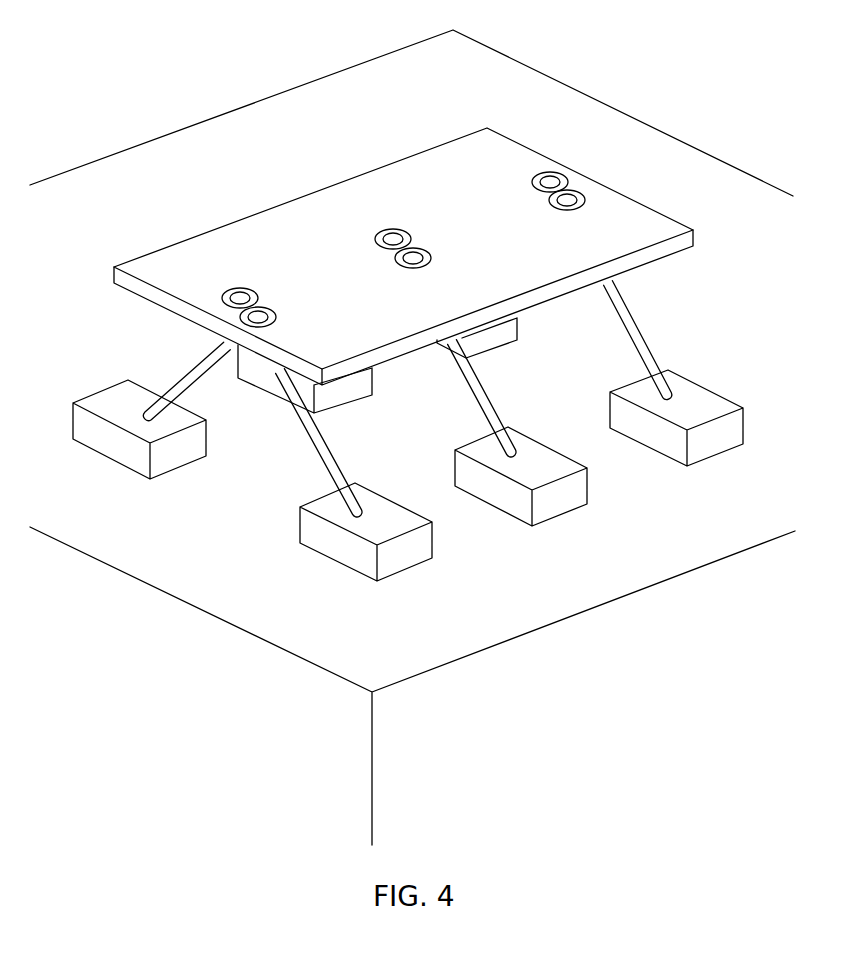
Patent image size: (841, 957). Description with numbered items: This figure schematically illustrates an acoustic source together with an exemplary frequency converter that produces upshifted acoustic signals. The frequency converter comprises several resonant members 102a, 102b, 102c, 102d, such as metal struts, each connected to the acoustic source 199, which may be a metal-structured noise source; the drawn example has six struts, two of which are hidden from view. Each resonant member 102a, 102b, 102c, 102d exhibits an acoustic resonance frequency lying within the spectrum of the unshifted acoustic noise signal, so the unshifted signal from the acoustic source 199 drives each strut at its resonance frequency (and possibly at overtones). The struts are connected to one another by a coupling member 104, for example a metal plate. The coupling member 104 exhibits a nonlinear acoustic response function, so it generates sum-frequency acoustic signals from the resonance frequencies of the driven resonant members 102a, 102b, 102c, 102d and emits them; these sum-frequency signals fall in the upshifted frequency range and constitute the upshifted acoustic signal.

The coupling member 104 is at (327, 213).
The resonant member 102a is at (187, 378).
The resonant member 102b is at (335, 463).
The resonant member 102c is at (485, 395).
The resonant member 102d is at (635, 332).
The acoustic source 199 is at (397, 120).